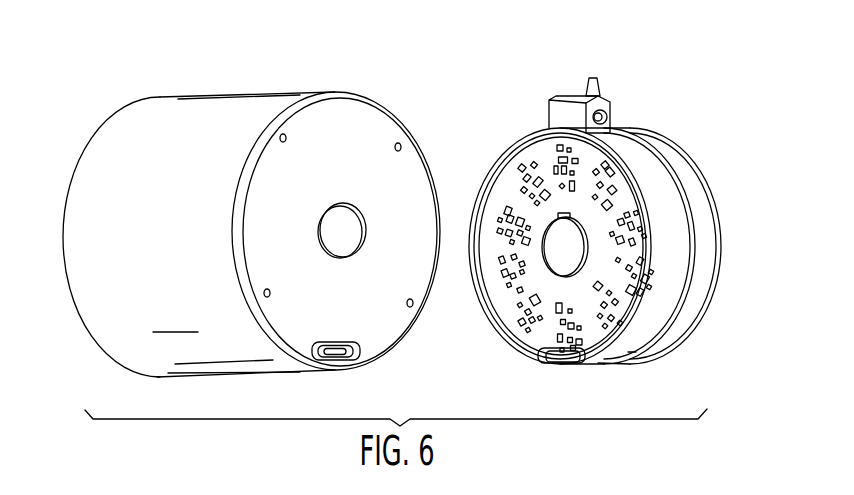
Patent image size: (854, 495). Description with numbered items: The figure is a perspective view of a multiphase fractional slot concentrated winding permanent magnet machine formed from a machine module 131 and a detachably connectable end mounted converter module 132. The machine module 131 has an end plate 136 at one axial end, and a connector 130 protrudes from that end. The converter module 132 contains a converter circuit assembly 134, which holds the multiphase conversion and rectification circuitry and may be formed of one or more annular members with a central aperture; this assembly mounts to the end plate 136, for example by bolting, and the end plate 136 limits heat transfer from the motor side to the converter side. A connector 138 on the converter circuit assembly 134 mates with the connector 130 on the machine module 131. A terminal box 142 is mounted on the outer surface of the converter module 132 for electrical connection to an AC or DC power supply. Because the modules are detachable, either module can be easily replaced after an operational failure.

The connector 130 is at (337, 353).
The machine module 131 is at (222, 78).
The converter module 132 is at (607, 82).
The converter circuit assembly 134 is at (540, 150).
The end plate 136 is at (322, 127).
The connector 138 is at (557, 363).
The terminal box 142 is at (607, 100).